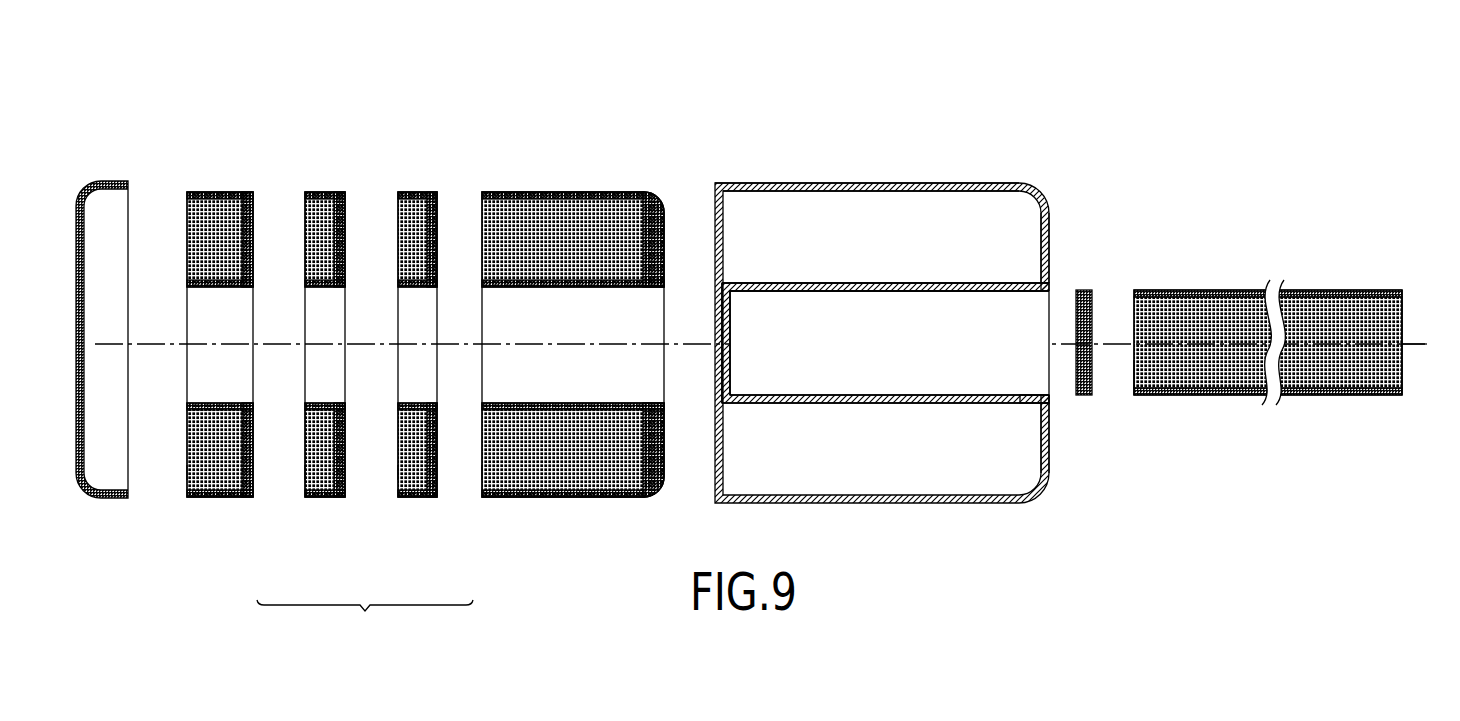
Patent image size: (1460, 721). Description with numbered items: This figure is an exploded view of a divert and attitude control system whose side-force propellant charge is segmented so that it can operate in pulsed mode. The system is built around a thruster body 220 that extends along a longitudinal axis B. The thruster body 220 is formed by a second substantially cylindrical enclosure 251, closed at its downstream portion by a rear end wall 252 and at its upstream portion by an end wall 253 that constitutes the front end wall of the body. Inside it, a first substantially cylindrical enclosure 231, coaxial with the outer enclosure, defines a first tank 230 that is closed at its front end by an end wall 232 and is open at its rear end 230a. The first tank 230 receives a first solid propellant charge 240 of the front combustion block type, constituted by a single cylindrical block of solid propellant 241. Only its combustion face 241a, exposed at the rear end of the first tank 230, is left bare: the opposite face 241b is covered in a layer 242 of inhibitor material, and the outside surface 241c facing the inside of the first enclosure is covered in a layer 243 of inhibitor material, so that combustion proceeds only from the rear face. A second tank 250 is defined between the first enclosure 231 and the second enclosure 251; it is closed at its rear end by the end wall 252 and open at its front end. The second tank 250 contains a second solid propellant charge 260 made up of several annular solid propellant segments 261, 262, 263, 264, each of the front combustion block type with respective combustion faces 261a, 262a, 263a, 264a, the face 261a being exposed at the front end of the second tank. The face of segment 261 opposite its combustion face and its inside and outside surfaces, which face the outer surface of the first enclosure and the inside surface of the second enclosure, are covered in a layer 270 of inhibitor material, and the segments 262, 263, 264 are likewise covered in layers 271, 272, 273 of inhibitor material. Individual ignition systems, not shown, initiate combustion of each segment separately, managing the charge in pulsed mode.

The thruster body 220 is at (1092, 64).
The end wall 253 is at (125, 182).
The layer of inhibitor material 270 is at (215, 373).
The layer of inhibitor material 271 is at (304, 373).
The layer of inhibitor material 272 is at (392, 373).
The layer of inhibitor material 273 is at (547, 373).
The solid propellant segment 261 is at (212, 472).
The solid propellant segment 262 is at (318, 477).
The solid propellant segment 263 is at (415, 477).
The solid propellant segment 264 is at (550, 477).
The combustion face 261a is at (187, 472).
The combustion face 262a is at (305, 472).
The combustion face 263a is at (398, 472).
The combustion face 264a is at (482, 472).
The second solid propellant charge 260 is at (365, 619).
The second tank 250 is at (910, 283).
The second substantially cylindrical enclosure 251 is at (788, 183).
The end wall 252 is at (1050, 232).
The first tank 230 is at (914, 349).
The first substantially cylindrical enclosure 231 is at (960, 283).
The end wall 232 is at (728, 368).
The rear end 230a is at (1050, 395).
The layer of inhibitor material 242 is at (1084, 290).
The first solid propellant charge 240 is at (1271, 341).
The block of solid propellant 241 is at (1212, 370).
The combustion face 241a is at (1402, 305).
The face 241b is at (1134, 375).
The outside surface 241c is at (1333, 300).
The layer of inhibitor material 243 is at (1225, 290).
The longitudinal axis B is at (1417, 362).